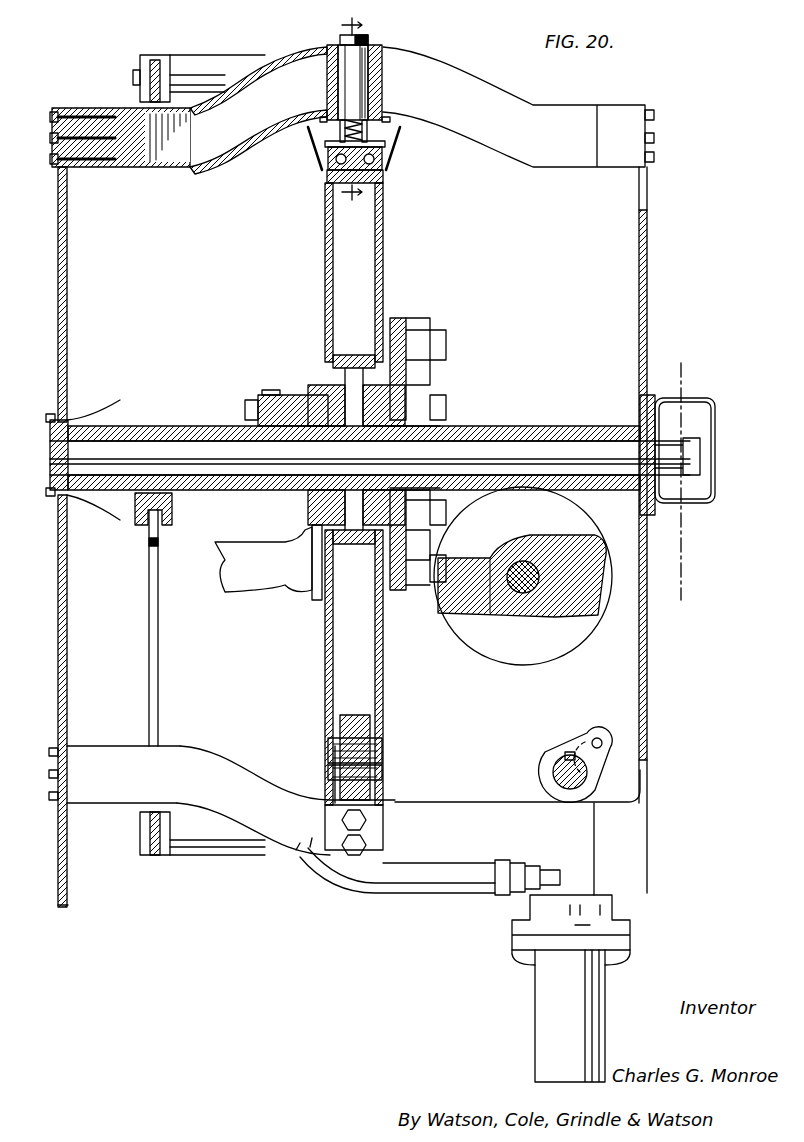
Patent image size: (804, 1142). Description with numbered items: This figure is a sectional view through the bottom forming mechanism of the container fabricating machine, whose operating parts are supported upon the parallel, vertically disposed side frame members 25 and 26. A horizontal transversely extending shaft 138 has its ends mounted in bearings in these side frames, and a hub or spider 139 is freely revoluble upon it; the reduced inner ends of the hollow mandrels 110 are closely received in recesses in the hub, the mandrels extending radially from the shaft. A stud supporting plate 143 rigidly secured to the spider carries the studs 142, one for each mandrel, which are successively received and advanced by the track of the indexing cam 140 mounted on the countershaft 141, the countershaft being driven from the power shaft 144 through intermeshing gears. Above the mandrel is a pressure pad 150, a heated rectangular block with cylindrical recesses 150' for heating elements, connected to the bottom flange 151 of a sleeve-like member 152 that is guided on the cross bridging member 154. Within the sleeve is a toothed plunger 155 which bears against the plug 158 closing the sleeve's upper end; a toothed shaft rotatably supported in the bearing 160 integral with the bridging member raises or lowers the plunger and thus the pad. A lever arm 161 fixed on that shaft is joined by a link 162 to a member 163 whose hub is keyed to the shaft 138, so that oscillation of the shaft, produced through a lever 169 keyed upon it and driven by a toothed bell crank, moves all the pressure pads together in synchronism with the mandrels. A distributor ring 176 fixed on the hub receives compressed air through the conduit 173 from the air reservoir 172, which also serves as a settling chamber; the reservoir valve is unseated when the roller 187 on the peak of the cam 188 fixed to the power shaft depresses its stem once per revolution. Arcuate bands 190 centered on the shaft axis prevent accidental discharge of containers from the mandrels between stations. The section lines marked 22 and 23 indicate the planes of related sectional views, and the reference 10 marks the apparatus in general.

The side frame member 26 is at (58, 303).
The side frame member 25 is at (645, 292).
The sleeve-like member 152 is at (392, 82).
The cross bridging member 154 is at (484, 140).
The plug 158 is at (340, 40).
The plunger 155 is at (348, 88).
The bottom flange 151 is at (385, 156).
The pressure pad 150 is at (383, 466).
The cylindrical recesses 150' is at (330, 157).
The section line 22 is at (337, 112).
The cylinder 10 is at (325, 240).
The mandrel 110 is at (385, 256).
The arcuate bands 190 is at (340, 728).
The member 163 is at (180, 420).
The shaft 138 is at (500, 440).
The lever 169 is at (705, 483).
The section line 23 is at (697, 482).
The distributor ring 176 is at (285, 388).
The stud supporting plate 143 is at (408, 330).
The stud 142 is at (446, 342).
The hub or spider 139 is at (406, 398).
The link 162 is at (150, 600).
The indexing cam 140 is at (445, 598).
The countershaft 141 is at (523, 594).
The power shaft 144 is at (555, 768).
The cam 188 is at (572, 745).
The roller 187 is at (601, 738).
The conduit 173 is at (348, 893).
The air reservoir 172 is at (540, 980).
The lever arm 161 is at (157, 58).
The bearing 160 is at (198, 62).